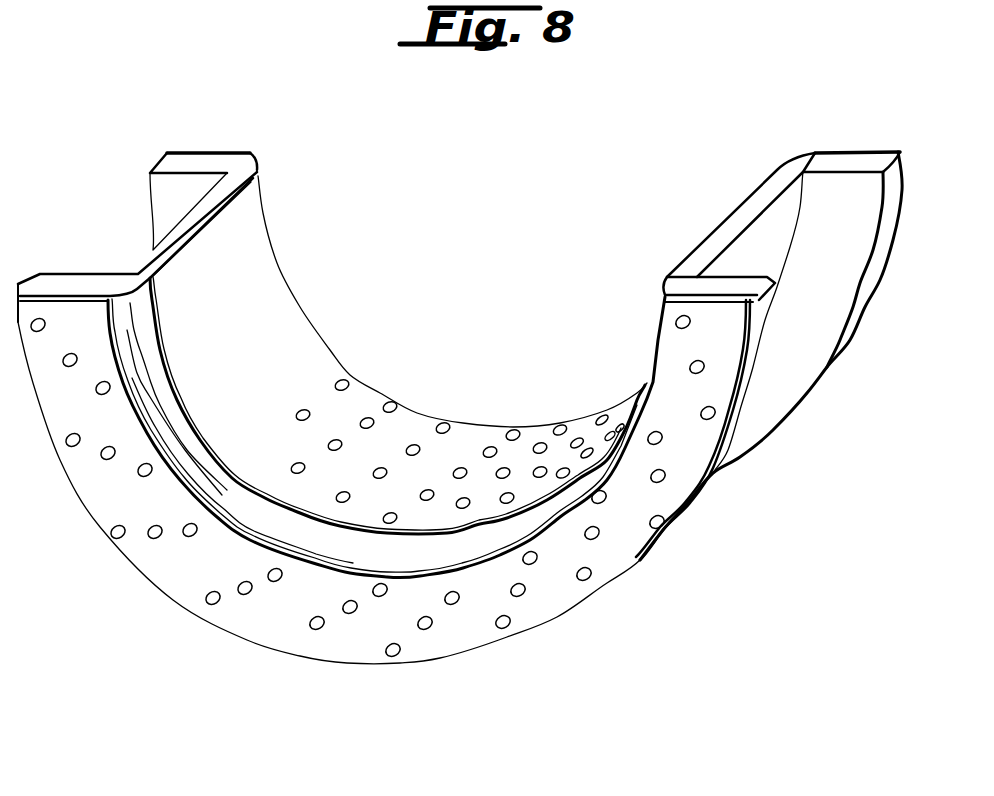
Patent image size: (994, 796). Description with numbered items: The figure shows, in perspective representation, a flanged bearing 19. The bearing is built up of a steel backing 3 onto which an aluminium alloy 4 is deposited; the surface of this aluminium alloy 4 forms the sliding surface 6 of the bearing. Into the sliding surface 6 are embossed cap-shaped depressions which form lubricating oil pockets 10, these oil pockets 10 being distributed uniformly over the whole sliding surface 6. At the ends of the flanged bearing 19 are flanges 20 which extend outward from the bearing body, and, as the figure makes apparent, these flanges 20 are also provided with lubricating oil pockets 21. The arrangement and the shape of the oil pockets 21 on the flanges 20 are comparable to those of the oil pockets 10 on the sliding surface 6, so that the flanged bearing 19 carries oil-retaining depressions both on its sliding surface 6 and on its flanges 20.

The steel backing 3 is at (155, 250).
The aluminium alloy 4 is at (250, 242).
The sliding surface 6 is at (282, 336).
The lubricating oil pockets 10 is at (445, 425).
The flanged bearing 19 is at (553, 630).
The flanges 20 is at (850, 163).
The lubricating oil pockets 21 is at (423, 630).